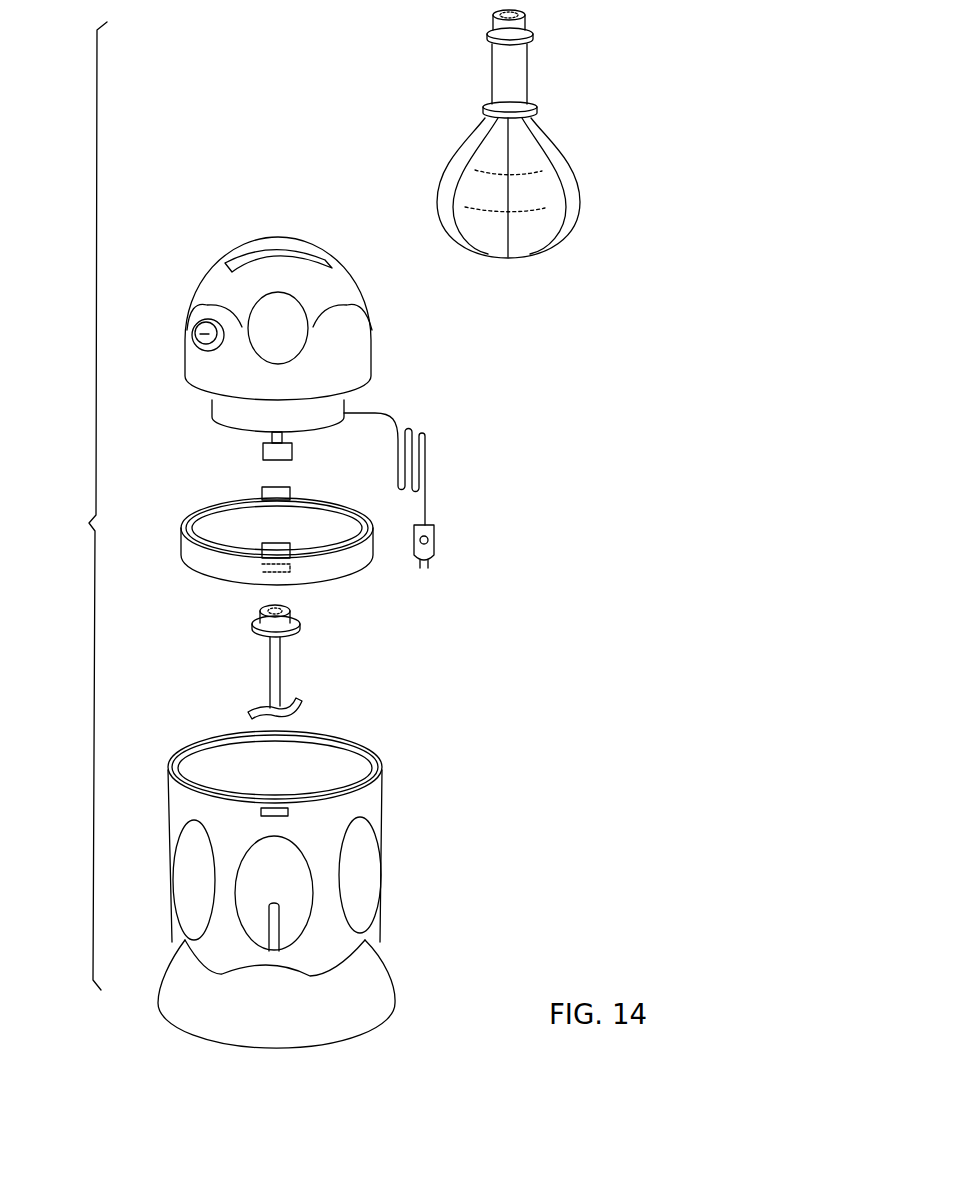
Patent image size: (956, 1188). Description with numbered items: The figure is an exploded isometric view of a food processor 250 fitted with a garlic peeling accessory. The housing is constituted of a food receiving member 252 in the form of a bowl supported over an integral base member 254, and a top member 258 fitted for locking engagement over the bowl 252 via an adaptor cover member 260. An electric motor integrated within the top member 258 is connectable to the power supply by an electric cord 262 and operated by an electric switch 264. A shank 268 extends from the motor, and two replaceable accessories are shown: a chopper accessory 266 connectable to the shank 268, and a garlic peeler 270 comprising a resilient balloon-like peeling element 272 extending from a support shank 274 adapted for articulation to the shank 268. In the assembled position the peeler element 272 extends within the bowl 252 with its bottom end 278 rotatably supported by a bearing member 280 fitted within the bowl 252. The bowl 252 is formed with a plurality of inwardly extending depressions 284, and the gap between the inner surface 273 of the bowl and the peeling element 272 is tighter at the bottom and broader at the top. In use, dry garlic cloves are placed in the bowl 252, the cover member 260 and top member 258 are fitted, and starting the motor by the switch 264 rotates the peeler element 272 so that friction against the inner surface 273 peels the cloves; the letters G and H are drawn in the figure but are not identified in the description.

The food processor 250 is at (74, 506).
The food receiving member 252 is at (298, 842).
The base member 254 is at (363, 988).
The top member 258 is at (322, 402).
The adaptor cover member 260 is at (338, 563).
The electric cord 262 is at (430, 470).
The electric switch 264 is at (193, 335).
The chopper accessory 266 is at (283, 673).
The shank 268 is at (262, 450).
The garlic peeler 270 is at (562, 151).
The peeling element 272 is at (563, 183).
The inner surface 273 is at (312, 760).
The support shank 274 is at (517, 74).
The bottom end 278 is at (528, 256).
The bearing member 280 is at (282, 922).
The depressions 284 is at (272, 877).
The groove alignment G is at (268, 800).
The bulb shoulder H is at (475, 134).